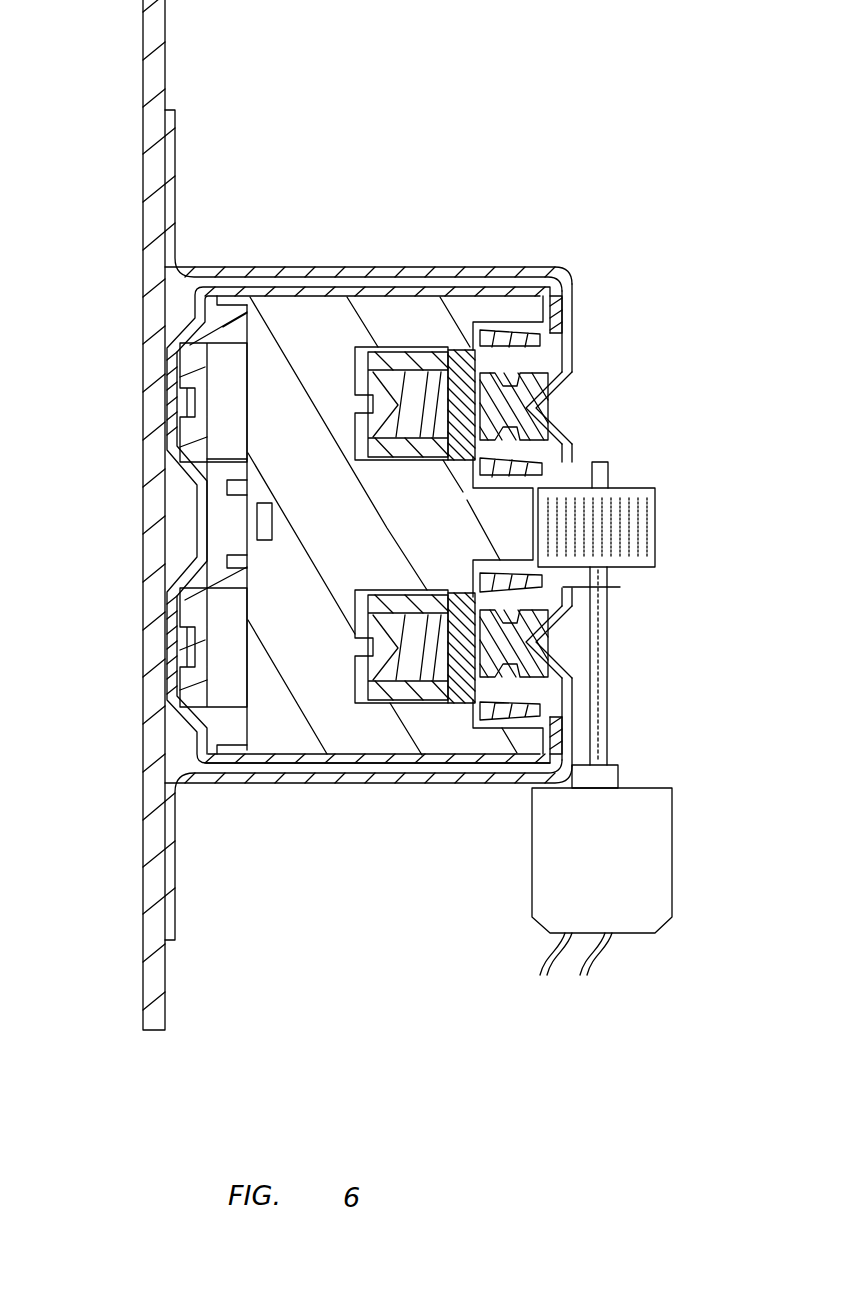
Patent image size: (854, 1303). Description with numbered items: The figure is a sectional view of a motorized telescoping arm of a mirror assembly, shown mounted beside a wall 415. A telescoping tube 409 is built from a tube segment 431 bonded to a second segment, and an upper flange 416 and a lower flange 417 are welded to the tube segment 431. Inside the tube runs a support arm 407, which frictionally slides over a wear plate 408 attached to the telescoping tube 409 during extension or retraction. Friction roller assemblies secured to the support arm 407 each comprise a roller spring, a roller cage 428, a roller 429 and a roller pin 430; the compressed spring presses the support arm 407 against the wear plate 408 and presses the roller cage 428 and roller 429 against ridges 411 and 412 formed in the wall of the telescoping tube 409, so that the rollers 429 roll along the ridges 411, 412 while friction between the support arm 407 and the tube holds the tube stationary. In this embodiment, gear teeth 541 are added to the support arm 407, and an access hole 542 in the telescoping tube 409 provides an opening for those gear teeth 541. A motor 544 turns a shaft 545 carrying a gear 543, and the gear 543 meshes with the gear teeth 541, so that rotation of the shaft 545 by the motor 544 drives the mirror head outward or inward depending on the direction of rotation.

The wall 415 is at (143, 75).
The upper flange 416 is at (177, 153).
The lower flange 417 is at (177, 870).
The telescoping tube 409 is at (183, 335).
The support arm 407 is at (298, 332).
The wear plate 408 is at (183, 447).
The roller cage 428 is at (383, 350).
The roller pin 430 is at (480, 360).
The roller 429 is at (535, 375).
The ridge 411 is at (557, 384).
The ridge 412 is at (551, 627).
The tube segment 431 is at (452, 775).
The gear teeth 541 is at (533, 487).
The access hole 542 is at (563, 587).
The gear 543 is at (655, 512).
The motor 544 is at (637, 912).
The shaft 545 is at (608, 732).